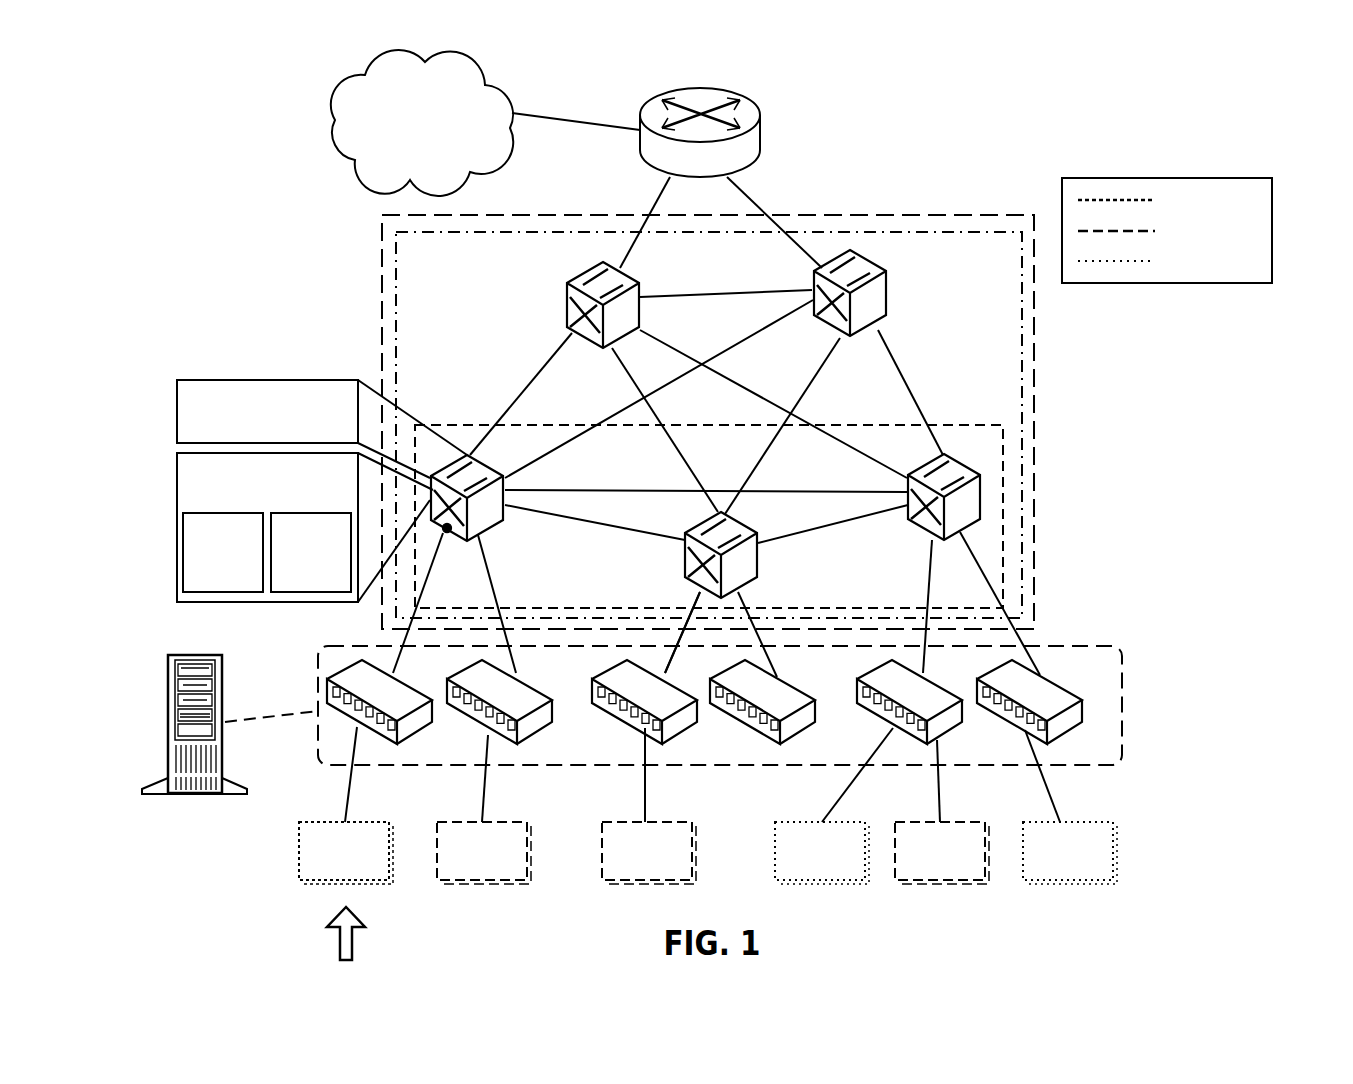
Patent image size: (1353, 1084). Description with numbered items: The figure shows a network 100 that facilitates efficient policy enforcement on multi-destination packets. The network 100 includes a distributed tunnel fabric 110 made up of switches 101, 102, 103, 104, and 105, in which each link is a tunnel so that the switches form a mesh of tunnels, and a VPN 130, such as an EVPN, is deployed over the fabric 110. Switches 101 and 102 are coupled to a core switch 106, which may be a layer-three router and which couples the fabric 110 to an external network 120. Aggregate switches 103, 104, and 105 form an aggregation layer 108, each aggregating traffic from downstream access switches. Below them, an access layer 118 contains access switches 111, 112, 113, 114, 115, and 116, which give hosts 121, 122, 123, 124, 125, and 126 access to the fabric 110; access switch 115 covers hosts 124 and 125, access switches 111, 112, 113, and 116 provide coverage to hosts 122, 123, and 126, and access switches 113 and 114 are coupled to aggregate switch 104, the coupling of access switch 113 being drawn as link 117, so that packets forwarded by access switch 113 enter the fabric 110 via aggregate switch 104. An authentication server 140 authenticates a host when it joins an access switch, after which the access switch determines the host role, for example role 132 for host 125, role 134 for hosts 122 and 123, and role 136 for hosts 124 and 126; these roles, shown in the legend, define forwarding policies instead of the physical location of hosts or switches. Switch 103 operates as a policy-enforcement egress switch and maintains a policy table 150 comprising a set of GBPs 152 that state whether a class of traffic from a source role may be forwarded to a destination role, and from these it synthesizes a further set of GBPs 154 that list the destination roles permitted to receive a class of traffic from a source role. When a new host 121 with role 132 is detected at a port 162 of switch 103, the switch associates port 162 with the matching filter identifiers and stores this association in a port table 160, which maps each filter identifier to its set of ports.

The network 100 is at (230, 147).
The external network 120 is at (422, 123).
The core switch 106 is at (757, 128).
The distributed tunnel fabric 110 is at (912, 215).
The VPN 130 is at (1020, 337).
The role 132 is at (1160, 200).
The host role 134 is at (1160, 231).
The role 136 is at (1160, 261).
The switch 101 is at (565, 293).
The switch 102 is at (887, 292).
The aggregate switch 103 is at (487, 536).
The aggregate switch 104 is at (745, 578).
The aggregate switch 105 is at (910, 527).
The aggregation layer 108 is at (1003, 530).
The port table 160 is at (267, 411).
The policy table 150 is at (267, 527).
The set of GBPs 152 is at (223, 552).
The set of GBPs 154 is at (311, 552).
The port 162 is at (447, 532).
The access switch 111 is at (412, 737).
The access switch 112 is at (532, 737).
The access switch 113 is at (677, 737).
The access switch 114 is at (795, 737).
The access switch 115 is at (942, 737).
The access switch 116 is at (1062, 737).
The link 117 is at (668, 672).
The access layer 118 is at (1122, 697).
The host 121 is at (346, 853).
The host 122 is at (484, 853).
The host 123 is at (649, 853).
The host 124 is at (822, 853).
The host 125 is at (942, 853).
The host 126 is at (1070, 853).
The authentication server 140 is at (197, 795).